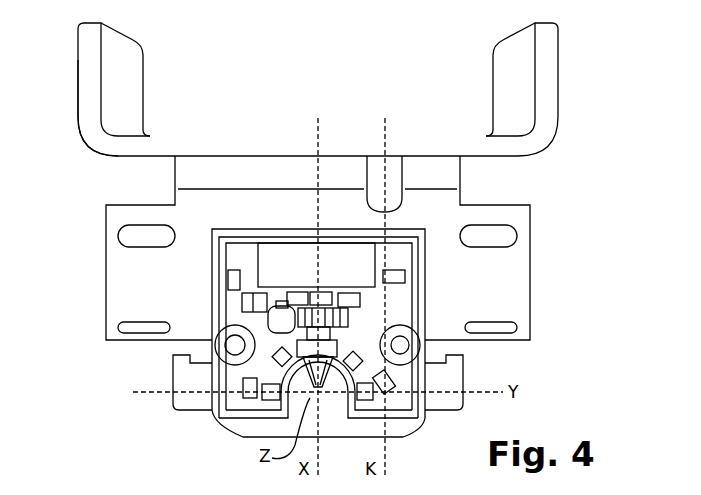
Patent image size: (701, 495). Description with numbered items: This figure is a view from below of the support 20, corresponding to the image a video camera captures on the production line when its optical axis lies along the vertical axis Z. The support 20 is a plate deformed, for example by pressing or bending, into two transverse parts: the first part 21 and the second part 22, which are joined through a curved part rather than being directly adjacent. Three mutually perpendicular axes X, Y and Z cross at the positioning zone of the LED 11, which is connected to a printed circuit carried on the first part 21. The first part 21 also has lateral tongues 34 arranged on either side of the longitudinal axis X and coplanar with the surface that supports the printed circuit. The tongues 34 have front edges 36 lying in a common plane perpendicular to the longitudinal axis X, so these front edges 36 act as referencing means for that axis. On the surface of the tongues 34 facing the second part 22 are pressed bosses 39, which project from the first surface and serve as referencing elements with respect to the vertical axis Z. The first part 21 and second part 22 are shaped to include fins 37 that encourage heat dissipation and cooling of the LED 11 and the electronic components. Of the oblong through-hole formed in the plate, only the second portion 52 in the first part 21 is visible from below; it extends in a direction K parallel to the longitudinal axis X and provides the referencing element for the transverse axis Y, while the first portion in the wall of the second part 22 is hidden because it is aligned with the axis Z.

The LED 11 is at (320, 400).
The support 20 is at (353, 102).
The first part 21 is at (240, 212).
The second part 22 is at (98, 134).
The lateral tongues 34 is at (120, 280).
The front edges 36 is at (130, 353).
The fins 37 is at (548, 78).
The bosses 39 is at (145, 233).
The second portion 52 is at (390, 207).